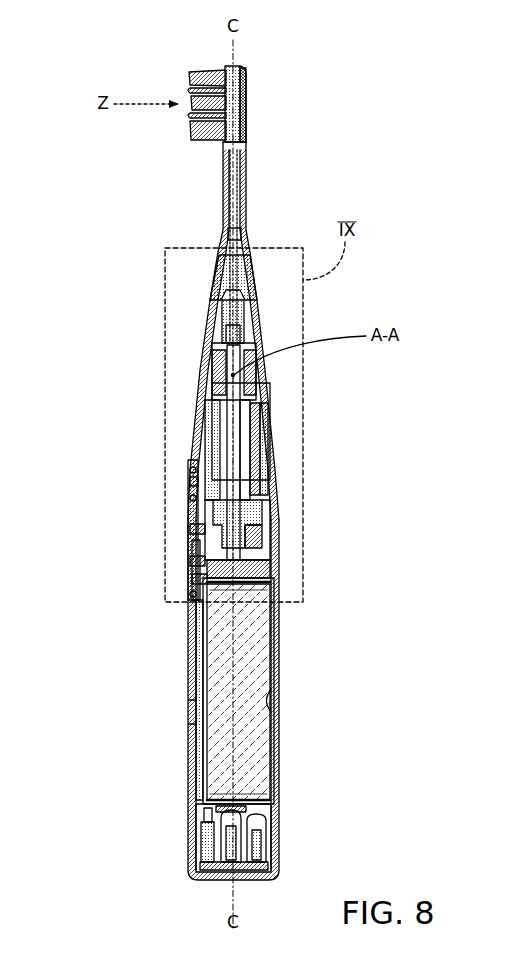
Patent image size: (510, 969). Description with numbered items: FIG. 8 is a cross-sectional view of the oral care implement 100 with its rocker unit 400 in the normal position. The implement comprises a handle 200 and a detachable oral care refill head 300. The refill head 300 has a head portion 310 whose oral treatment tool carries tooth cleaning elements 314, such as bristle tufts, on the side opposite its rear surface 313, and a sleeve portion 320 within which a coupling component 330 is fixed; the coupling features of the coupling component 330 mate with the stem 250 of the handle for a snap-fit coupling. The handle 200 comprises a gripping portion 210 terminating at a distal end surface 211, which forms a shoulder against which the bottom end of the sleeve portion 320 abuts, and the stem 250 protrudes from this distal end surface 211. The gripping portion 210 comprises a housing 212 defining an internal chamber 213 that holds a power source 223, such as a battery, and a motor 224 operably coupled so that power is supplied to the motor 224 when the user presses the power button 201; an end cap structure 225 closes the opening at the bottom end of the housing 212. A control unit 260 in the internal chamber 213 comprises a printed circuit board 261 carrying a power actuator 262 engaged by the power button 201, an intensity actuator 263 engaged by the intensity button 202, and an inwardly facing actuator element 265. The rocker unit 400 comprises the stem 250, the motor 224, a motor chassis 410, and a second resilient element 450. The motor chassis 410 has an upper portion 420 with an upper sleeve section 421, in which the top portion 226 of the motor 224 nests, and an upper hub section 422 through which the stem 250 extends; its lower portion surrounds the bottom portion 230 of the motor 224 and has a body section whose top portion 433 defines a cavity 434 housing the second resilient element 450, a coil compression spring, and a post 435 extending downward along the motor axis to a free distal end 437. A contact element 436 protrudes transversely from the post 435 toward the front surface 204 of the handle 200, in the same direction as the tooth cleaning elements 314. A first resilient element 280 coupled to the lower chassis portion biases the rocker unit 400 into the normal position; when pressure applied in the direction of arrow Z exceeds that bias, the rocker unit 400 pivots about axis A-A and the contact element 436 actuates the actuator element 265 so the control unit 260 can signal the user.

The oral care implement 100 is at (72, 233).
The handle 200 is at (167, 763).
The power button 201 is at (190, 480).
The intensity button 202 is at (192, 575).
The front surface 204 is at (188, 712).
The gripping portion 210 is at (278, 662).
The distal end surface 211 is at (277, 688).
The housing 212 is at (267, 715).
The internal chamber 213 is at (279, 763).
The power source 223 is at (253, 780).
The motor 224 is at (272, 468).
The end cap structure 225 is at (188, 863).
The top portion of the motor 226 is at (272, 440).
The bottom portion of the motor 230 is at (277, 490).
The stem 250 is at (240, 325).
The control unit 260 is at (190, 512).
The printed circuit board 261 is at (188, 528).
The power actuator 262 is at (190, 470).
The intensity actuator 263 is at (193, 580).
The actuator element 265 is at (188, 560).
The first resilient element 280 is at (280, 603).
The oral care refill head 300 is at (252, 152).
The head portion 310 is at (254, 110).
The rear surface 313 is at (244, 88).
The tooth cleaning elements 314 is at (193, 100).
The sleeve portion 320 is at (212, 233).
The coupling component 330 is at (218, 275).
The rocker unit 400 is at (263, 396).
The motor chassis 410 is at (259, 379).
The upper portion of the motor chassis 420 is at (270, 415).
The upper sleeve section 421 is at (212, 400).
The upper hub section 422 is at (213, 372).
The top portion of the body section 433 is at (275, 542).
The cavity 434 is at (190, 497).
The post 435 is at (275, 557).
The contact element 436 is at (190, 592).
The free distal end 437 is at (192, 663).
The second resilient element 450 is at (275, 530).